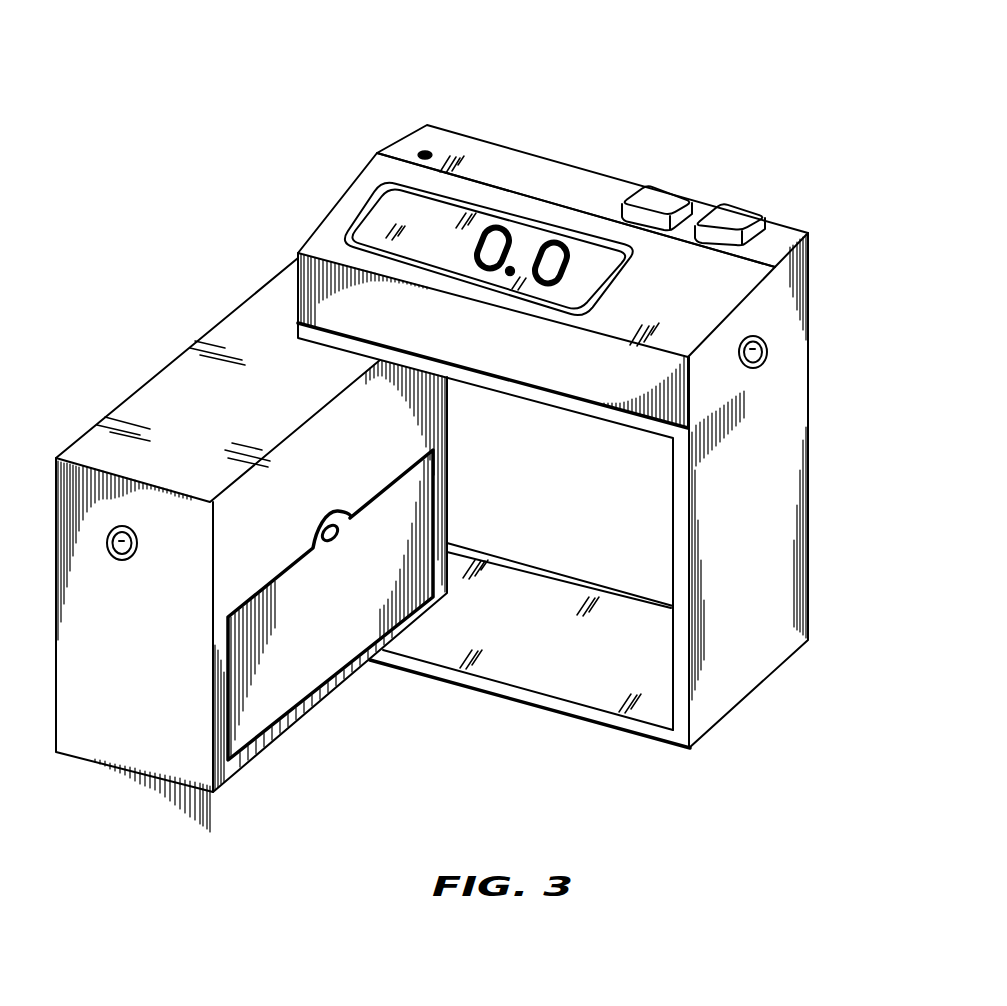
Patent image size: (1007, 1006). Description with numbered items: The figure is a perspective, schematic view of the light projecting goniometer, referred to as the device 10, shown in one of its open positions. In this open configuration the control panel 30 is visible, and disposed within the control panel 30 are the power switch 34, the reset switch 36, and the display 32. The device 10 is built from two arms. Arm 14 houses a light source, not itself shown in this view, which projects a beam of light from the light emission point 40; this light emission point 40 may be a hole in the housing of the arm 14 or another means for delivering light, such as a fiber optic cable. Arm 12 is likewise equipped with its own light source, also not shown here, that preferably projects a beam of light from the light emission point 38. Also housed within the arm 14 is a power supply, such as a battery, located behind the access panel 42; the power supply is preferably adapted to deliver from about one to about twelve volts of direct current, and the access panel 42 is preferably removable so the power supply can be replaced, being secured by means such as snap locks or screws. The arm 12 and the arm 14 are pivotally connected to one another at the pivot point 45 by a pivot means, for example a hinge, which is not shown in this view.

The device 10 is at (561, 122).
The arm 12 is at (150, 377).
The arm 14 is at (757, 562).
The control panel 30 is at (296, 211).
The display 32 is at (411, 207).
The power switch 34 is at (735, 214).
The reset switch 36 is at (660, 192).
The light emission point 38 is at (110, 528).
The light emission point 40 is at (770, 345).
The access panel 42 is at (330, 660).
The pivot point 45 is at (423, 149).